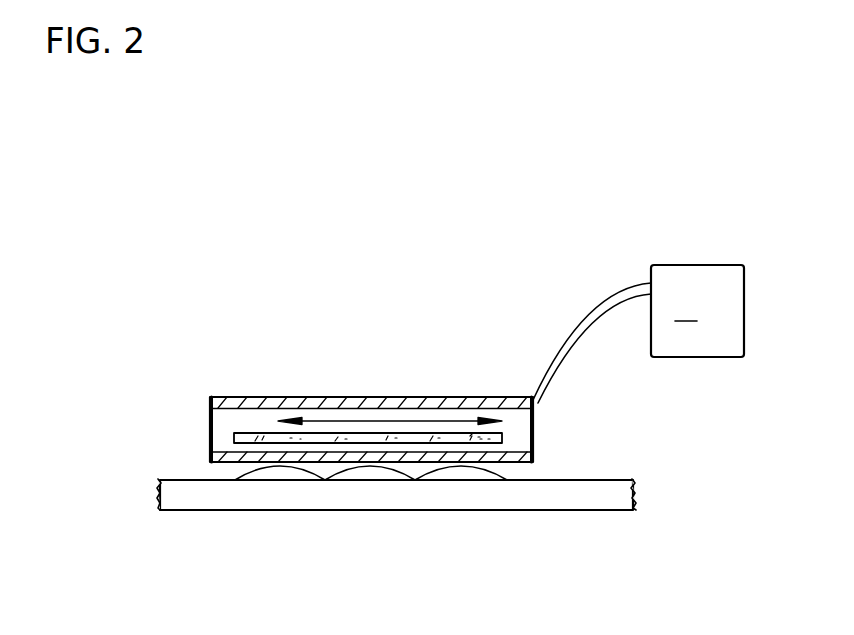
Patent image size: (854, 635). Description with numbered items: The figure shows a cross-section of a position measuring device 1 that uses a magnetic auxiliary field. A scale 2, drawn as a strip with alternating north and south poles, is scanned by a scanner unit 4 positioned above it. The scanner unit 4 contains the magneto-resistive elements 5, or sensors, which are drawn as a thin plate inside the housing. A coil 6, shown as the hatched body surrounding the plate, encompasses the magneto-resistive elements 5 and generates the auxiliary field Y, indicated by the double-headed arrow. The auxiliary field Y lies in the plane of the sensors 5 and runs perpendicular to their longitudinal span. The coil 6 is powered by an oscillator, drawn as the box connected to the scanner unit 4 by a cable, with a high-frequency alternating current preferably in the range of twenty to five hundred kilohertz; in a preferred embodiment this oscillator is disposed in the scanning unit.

The magnetic sensor assembly 1 is at (435, 372).
The scale 2 is at (612, 497).
The scanner unit 4 is at (502, 437).
The magneto-resistive elements 5 is at (254, 430).
The coil 6 is at (347, 403).
The auxiliary field Y is at (414, 421).